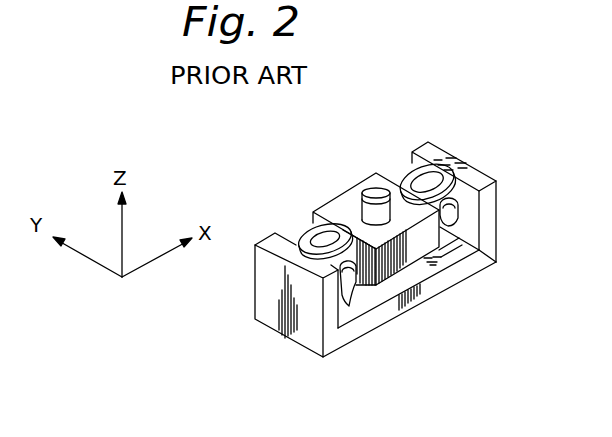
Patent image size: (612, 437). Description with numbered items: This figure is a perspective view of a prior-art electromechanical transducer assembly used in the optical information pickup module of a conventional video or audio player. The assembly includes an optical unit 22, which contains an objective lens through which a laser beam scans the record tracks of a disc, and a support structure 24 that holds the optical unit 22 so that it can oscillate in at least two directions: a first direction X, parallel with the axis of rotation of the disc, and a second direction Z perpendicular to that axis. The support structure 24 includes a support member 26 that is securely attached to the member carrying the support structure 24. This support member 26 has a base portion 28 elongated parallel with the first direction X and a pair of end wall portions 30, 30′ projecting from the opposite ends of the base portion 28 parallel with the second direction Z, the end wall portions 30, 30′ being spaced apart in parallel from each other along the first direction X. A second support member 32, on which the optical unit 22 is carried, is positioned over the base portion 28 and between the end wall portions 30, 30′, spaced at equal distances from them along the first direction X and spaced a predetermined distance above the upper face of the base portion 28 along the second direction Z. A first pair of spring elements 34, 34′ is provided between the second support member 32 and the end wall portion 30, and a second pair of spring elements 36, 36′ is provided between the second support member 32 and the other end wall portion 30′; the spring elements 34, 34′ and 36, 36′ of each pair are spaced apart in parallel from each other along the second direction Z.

The optical unit 22 is at (362, 191).
The support structure 24 is at (437, 318).
The support member 26 is at (498, 262).
The base portion 28 is at (393, 319).
The end wall portion 30 is at (288, 332).
The end wall portion 30′ is at (498, 187).
The second support member 32 is at (427, 258).
The spring element 34 is at (302, 224).
The spring element 34′ is at (349, 308).
The spring element 36 is at (404, 168).
The spring element 36′ is at (449, 221).